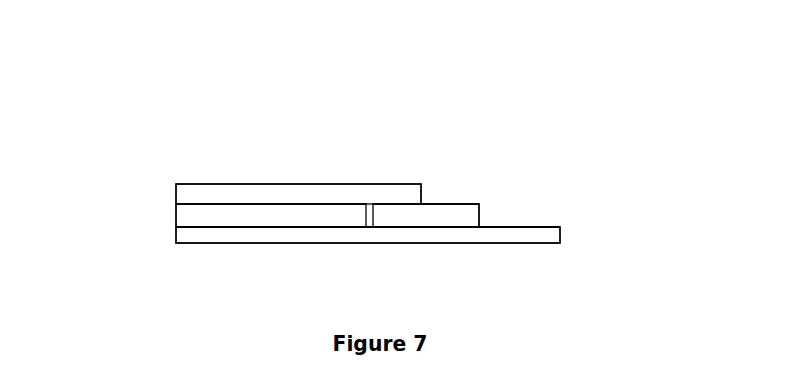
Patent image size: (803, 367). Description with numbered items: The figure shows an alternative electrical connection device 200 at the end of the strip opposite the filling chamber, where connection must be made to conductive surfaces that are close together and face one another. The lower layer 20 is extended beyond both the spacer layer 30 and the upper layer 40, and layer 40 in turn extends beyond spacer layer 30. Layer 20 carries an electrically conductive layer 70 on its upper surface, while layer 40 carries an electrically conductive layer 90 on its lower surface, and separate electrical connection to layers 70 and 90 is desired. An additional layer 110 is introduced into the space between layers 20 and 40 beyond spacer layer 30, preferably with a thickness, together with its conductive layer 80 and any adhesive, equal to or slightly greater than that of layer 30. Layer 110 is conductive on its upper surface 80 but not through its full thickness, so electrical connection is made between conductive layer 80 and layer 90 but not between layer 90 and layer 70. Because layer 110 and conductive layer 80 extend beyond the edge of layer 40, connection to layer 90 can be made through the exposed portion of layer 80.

The connection device 200 is at (353, 122).
The layer 40 is at (172, 192).
The spacer layer 30 is at (172, 214).
The layer 20 is at (172, 235).
The additional layer 110 is at (482, 210).
The conductive layer 80 is at (452, 203).
The electrically conductive layer 90 is at (298, 204).
The electrically conductive layer 70 is at (532, 227).